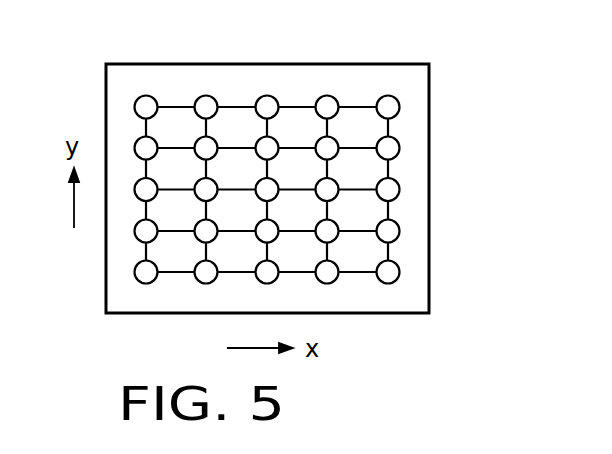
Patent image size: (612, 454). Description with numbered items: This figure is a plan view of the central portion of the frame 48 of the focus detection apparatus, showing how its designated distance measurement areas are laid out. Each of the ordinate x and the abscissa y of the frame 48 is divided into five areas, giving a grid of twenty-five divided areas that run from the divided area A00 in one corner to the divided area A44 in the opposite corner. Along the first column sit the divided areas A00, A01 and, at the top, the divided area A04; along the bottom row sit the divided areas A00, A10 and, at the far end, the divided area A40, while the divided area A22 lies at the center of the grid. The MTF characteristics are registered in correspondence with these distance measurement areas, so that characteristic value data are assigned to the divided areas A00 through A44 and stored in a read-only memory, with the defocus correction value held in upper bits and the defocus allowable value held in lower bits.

The frame 48 is at (403, 302).
The divided area A04 is at (146, 105).
The divided area A22 is at (268, 187).
The divided area A44 is at (388, 106).
The divided area A40 is at (390, 273).
The divided area A01 is at (145, 231).
The divided area A00 is at (144, 274).
The divided area A10 is at (205, 274).